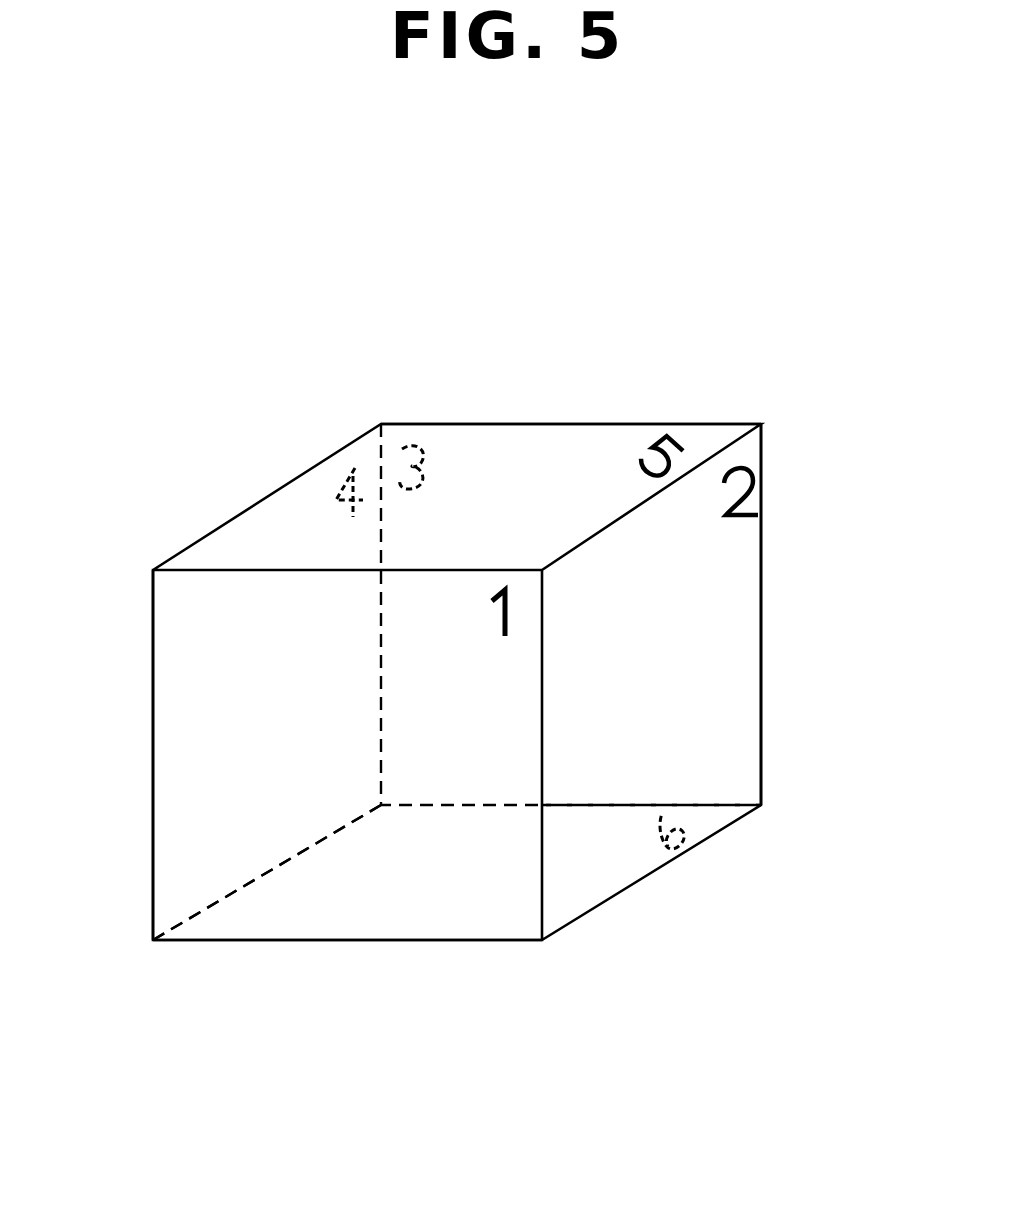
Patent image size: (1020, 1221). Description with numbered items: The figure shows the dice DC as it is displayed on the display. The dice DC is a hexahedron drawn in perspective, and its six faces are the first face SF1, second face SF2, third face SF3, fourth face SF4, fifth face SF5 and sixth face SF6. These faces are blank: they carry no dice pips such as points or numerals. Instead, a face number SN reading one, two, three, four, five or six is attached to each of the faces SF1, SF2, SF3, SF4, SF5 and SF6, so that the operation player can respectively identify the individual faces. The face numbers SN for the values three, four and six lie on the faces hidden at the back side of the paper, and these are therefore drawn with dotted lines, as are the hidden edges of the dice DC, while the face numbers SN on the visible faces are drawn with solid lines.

The dice DC is at (435, 268).
The face number SN is at (345, 470).
The first face SF1 is at (185, 673).
The second face SF2 is at (745, 638).
The third face SF3 is at (750, 705).
The fourth face SF4 is at (195, 797).
The fifth face SF5 is at (566, 442).
The sixth face SF6 is at (400, 906).